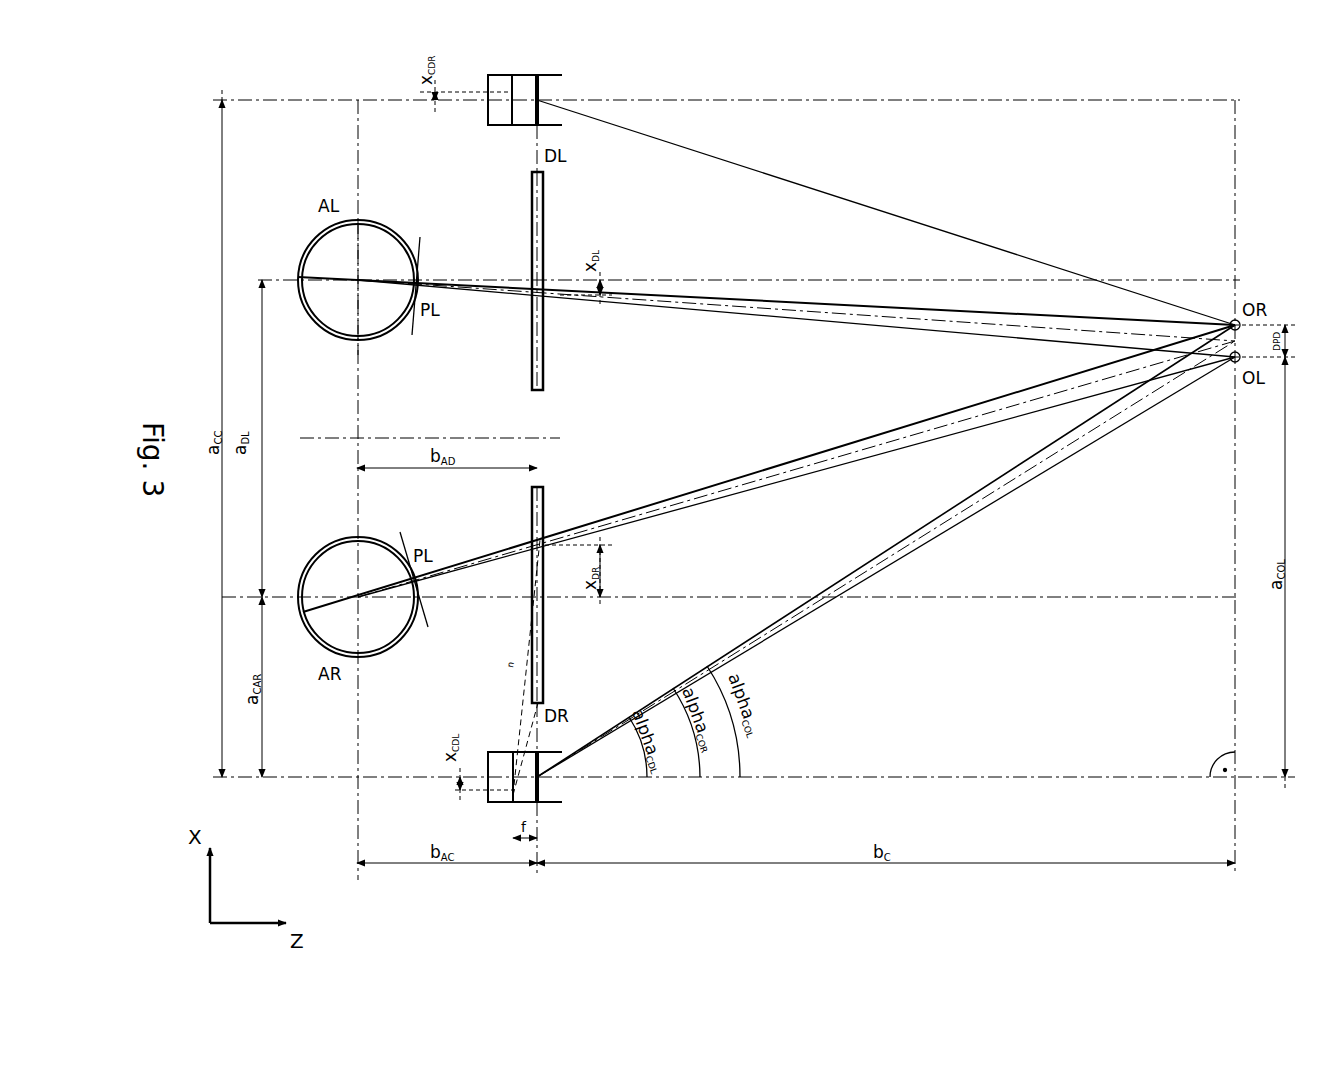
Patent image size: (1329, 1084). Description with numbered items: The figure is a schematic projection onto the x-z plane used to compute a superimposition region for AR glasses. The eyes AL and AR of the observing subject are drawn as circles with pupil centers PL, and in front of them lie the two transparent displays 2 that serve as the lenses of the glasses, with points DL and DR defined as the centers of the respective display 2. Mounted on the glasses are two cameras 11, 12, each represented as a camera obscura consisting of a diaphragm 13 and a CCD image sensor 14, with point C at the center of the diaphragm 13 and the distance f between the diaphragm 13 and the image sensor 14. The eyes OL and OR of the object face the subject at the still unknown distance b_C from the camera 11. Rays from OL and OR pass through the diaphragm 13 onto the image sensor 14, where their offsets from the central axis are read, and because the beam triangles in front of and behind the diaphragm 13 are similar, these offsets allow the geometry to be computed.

The display 2 is at (612, 440).
The camera 11 is at (551, 796).
The camera 12 is at (545, 118).
The diaphragm 13 is at (575, 779).
The CCD image sensor 14 is at (490, 796).